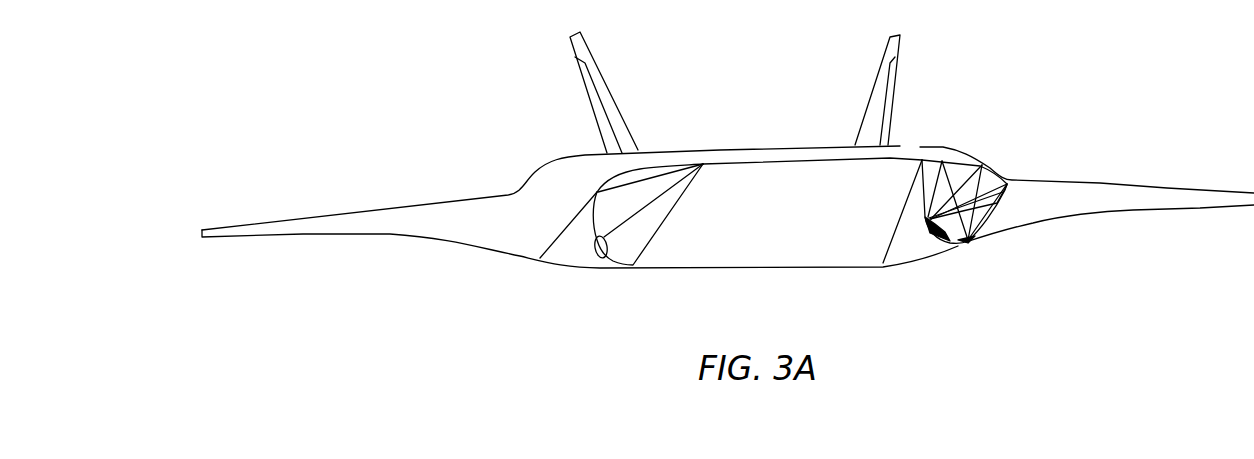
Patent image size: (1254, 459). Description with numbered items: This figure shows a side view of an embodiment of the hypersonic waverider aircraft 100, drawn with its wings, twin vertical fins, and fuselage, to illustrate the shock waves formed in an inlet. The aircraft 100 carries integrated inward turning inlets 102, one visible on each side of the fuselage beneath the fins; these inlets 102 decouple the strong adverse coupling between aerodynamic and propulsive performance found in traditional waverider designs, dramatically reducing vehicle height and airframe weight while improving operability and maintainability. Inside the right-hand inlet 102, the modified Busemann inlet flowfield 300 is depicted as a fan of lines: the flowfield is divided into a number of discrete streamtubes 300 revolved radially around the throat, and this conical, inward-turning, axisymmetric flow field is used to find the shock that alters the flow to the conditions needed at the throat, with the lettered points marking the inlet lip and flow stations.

The hypersonic waverider aircraft 100 is at (457, 97).
The inward turning inlet 102 is at (610, 260).
The inlet flowfield streamtubes 300 is at (995, 170).